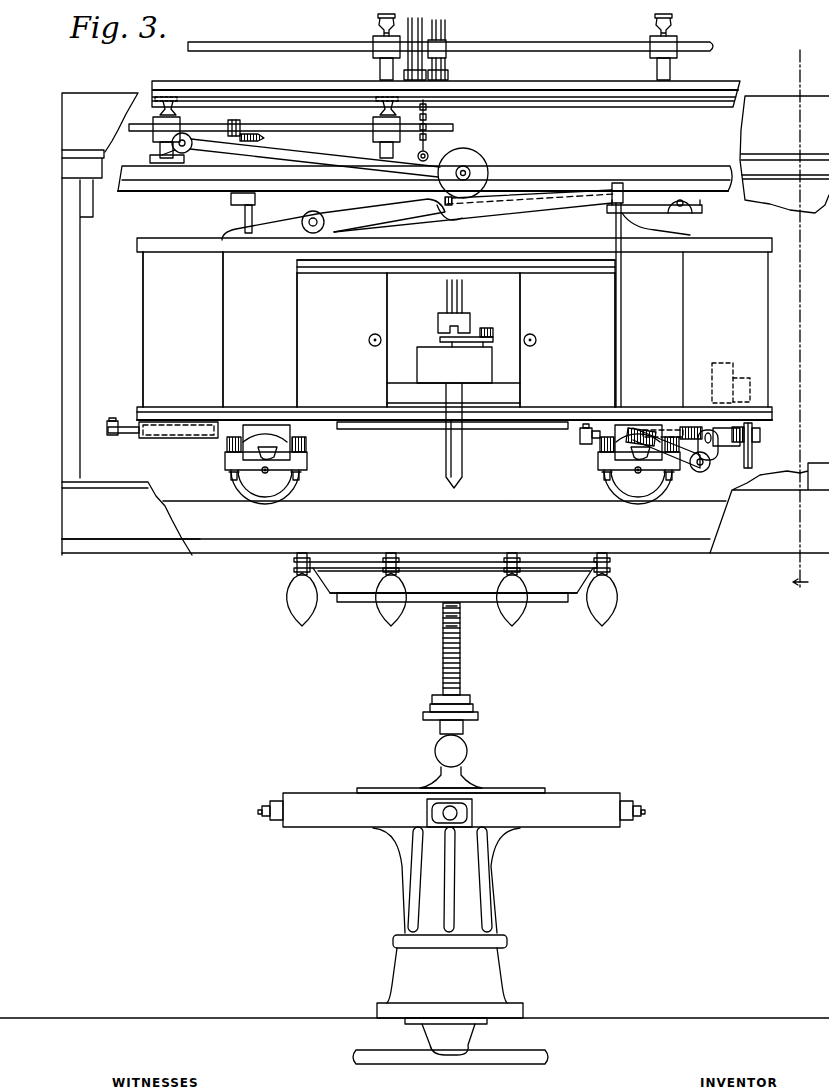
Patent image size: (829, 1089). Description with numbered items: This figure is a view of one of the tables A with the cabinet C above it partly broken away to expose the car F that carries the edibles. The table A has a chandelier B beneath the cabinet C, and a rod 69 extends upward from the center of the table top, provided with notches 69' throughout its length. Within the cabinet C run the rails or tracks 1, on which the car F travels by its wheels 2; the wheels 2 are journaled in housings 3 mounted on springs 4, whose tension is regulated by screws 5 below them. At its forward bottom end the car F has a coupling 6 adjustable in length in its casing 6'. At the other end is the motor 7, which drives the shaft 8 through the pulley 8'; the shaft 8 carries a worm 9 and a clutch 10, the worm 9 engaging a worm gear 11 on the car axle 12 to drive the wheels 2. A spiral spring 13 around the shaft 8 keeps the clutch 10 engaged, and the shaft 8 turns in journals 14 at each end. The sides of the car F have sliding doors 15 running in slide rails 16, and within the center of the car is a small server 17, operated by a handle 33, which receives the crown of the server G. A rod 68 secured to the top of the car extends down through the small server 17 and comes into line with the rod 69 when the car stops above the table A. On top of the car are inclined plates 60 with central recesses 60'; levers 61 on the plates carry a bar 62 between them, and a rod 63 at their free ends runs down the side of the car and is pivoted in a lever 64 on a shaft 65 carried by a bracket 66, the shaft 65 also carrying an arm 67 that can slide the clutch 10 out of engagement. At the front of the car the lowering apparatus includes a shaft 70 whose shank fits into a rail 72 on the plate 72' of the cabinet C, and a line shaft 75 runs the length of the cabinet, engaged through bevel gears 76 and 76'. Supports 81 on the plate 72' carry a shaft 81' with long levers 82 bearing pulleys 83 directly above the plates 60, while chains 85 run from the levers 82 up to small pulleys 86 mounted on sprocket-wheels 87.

The rails or tracks 1 is at (477, 502).
The wheels 2 is at (610, 491).
The housings 3 is at (268, 483).
The spring 4 is at (227, 448).
The screws 5 is at (232, 478).
The coupling 6 is at (121, 438).
The casing 6' is at (178, 442).
The motor 7 is at (722, 363).
The shaft 8 is at (579, 439).
The pulley 8' is at (761, 445).
The worm 9 is at (663, 421).
The clutch 10 is at (737, 447).
The worm gear 11 is at (652, 503).
The car axle 12 is at (641, 473).
The spiral spring 13 is at (685, 430).
The journals 14 is at (600, 447).
The sliding doors 15 is at (456, 340).
The slide rails 16 is at (560, 274).
The small server 17 is at (454, 365).
The handle 33 is at (484, 331).
The inclined plate 60 is at (333, 217).
The recess 60' is at (473, 214).
The lever 61 is at (523, 207).
The bar 62 is at (448, 207).
The rod 63 is at (620, 312).
The lever 64 is at (638, 426).
The shaft 65 is at (700, 472).
The bracket 66 is at (700, 428).
The arm 67 is at (709, 462).
The rod 68 is at (447, 437).
The rod 69 is at (442, 649).
The notches 69' is at (468, 630).
The shaft 70 is at (245, 213).
The rail 72 is at (243, 199).
The plate 72' is at (425, 190).
The line shaft 75 is at (313, 128).
The bevel gear 76 is at (246, 122).
The bevel gear 76' is at (265, 141).
The supports 81 is at (152, 150).
The shaft 81' is at (192, 130).
The long lever 82 is at (332, 163).
The pulley 83 is at (474, 162).
The chains 85 is at (428, 115).
The small pulleys 86 is at (436, 44).
The sprocket-wheels 87 is at (423, 26).
The table A is at (451, 822).
The pedestal A' is at (451, 922).
The chandelier B is at (450, 610).
The cabinet C is at (78, 553).
The car F is at (183, 329).
The server G is at (467, 747).